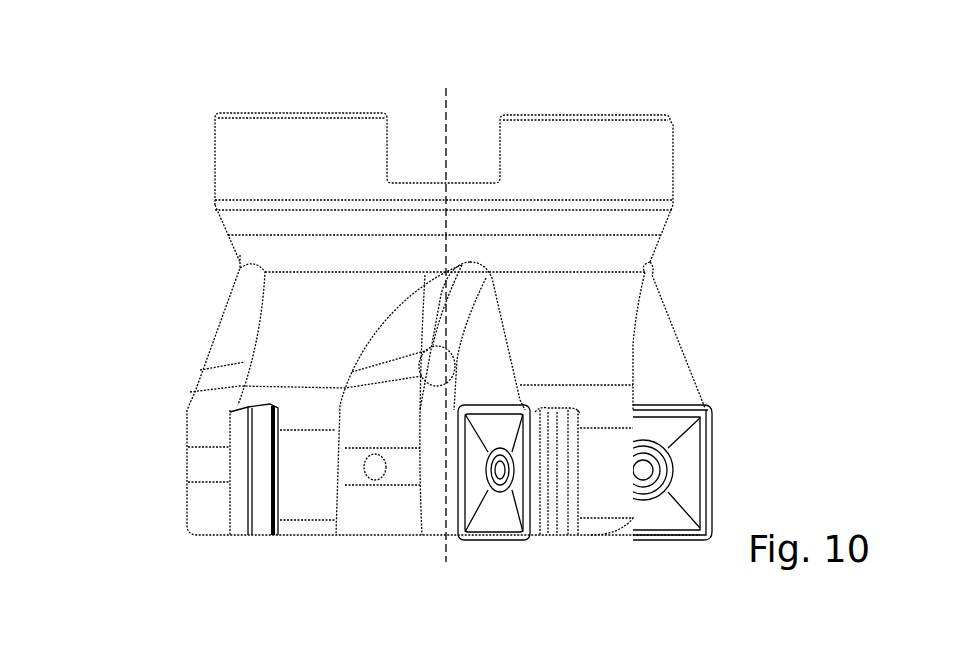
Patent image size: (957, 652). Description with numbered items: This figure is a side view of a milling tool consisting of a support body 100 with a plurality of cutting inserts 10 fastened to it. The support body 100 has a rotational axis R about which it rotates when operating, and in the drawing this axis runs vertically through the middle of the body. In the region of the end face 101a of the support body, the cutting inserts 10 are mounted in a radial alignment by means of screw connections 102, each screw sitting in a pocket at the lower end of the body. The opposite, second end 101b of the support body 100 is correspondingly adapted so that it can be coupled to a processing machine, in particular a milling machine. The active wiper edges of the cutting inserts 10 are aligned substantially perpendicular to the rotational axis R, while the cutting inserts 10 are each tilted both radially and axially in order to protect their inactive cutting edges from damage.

The support body 100 is at (172, 152).
The end face 101a is at (305, 540).
The second end 101b is at (560, 104).
The cutting insert 10 is at (246, 447).
The screw connection 102 is at (645, 471).
The rotational axis R is at (440, 312).